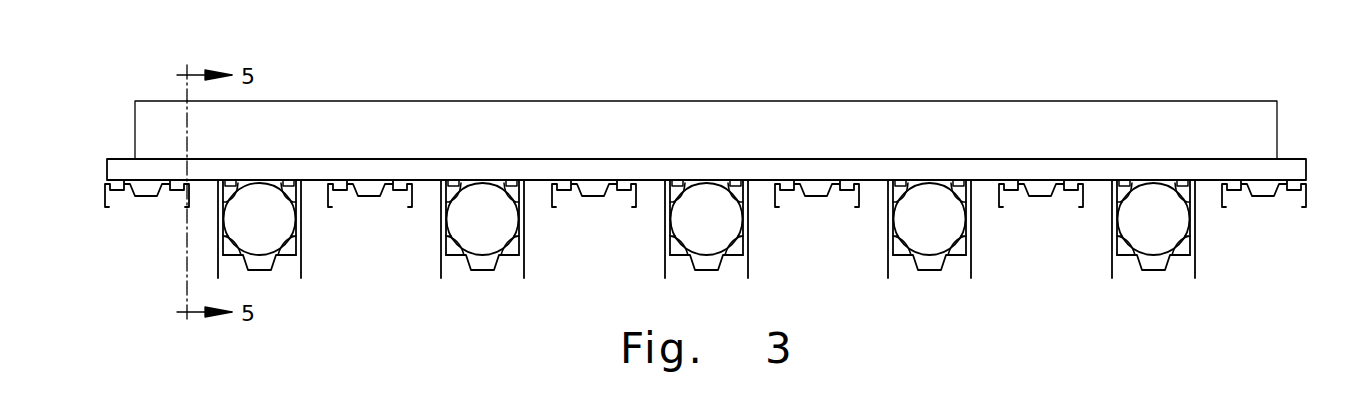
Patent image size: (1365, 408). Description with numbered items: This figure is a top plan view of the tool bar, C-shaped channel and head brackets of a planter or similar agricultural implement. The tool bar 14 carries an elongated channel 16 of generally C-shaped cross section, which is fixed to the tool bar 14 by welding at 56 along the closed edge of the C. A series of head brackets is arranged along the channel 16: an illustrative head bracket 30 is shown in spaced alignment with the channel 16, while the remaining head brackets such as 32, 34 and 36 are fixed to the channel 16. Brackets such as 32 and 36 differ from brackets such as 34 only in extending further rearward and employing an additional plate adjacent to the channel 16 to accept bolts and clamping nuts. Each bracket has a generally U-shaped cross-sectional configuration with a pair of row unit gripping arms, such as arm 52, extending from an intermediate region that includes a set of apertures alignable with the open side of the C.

The tool bar 14 is at (1250, 115).
The elongated channel 16 is at (1292, 167).
The weld 56 is at (663, 159).
The row unit gripping arm 52 is at (187, 205).
The head bracket 30 is at (107, 205).
The head bracket 34 is at (331, 200).
The head bracket 32 is at (302, 230).
The head bracket 36 is at (524, 275).